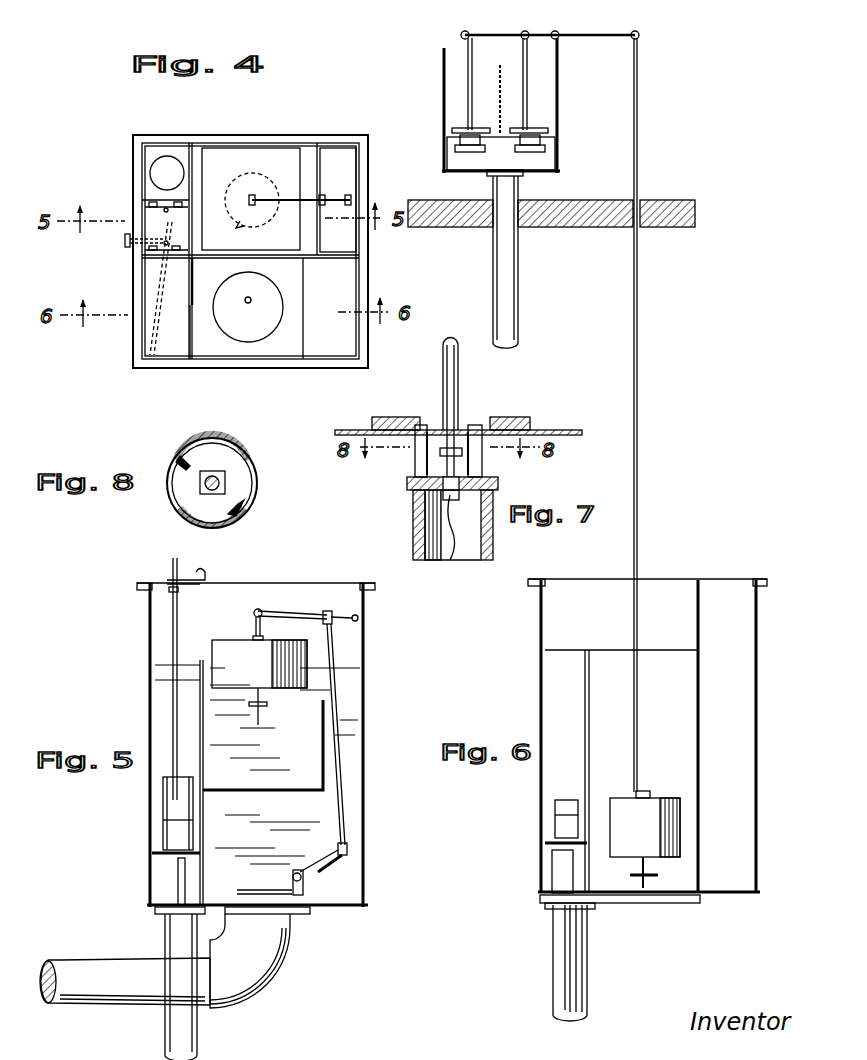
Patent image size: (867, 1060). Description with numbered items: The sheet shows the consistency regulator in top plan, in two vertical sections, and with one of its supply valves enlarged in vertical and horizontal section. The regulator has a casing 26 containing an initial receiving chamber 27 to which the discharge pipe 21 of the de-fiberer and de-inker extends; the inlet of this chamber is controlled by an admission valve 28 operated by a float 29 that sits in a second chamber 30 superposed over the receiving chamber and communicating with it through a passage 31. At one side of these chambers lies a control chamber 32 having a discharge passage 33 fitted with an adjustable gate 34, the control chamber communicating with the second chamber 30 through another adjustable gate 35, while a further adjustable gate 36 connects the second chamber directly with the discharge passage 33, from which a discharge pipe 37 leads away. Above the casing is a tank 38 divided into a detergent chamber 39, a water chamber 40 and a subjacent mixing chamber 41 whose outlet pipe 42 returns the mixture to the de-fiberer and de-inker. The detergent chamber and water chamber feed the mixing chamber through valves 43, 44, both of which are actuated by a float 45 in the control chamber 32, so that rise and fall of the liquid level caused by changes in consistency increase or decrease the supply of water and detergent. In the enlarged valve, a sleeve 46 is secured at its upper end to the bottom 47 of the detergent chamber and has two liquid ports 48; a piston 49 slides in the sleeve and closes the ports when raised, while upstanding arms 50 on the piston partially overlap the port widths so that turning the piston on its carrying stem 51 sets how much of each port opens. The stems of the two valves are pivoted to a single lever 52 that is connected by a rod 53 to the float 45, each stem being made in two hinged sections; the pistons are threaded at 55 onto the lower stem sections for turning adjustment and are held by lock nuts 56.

In FIG. 5, the discharge pipe 21 is at (122, 963).
In FIG. 4, the casing 26 is at (168, 140).
In FIG. 5, the casing 26 is at (147, 650).
In FIG. 6, the casing 26 is at (539, 805).
In FIG. 4, the initial receiving chamber 27 is at (322, 160).
In FIG. 5, the initial receiving chamber 27 is at (228, 905).
In FIG. 4, the admission valve 28 is at (300, 221).
In FIG. 5, the admission valve 28 is at (300, 905).
In FIG. 4, the operating float 29 is at (253, 153).
In FIG. 5, the operating float 29 is at (259, 682).
In FIG. 4, the second chamber 30 is at (196, 150).
In FIG. 5, the second chamber 30 is at (302, 740).
In FIG. 6, the second chamber 30 is at (621, 771).
In FIG. 4, the passage 31 is at (160, 170).
In FIG. 5, the passage 31 is at (352, 772).
In FIG. 4, the control chamber 32 is at (290, 345).
In FIG. 6, the control chamber 32 is at (622, 890).
In FIG. 4, the discharge passage 33 is at (190, 330).
In FIG. 5, the discharge passage 33 is at (190, 875).
In FIG. 6, the discharge passage 33 is at (565, 905).
In FIG. 4, the adjustable gate 34 is at (150, 283).
In FIG. 5, the adjustable gate 34 is at (180, 893).
In FIG. 6, the adjustable gate 34 is at (565, 872).
In FIG. 4, the adjustable gate 35 is at (175, 255).
In FIG. 6, the adjustable gate 35 is at (560, 815).
In FIG. 4, the adjustable gate 36 is at (150, 200).
In FIG. 5, the adjustable gate 36 is at (178, 812).
In FIG. 5, the discharge pipe 37 is at (172, 1030).
In FIG. 6, the discharge pipe 37 is at (555, 965).
In FIG. 6, the tank 38 is at (558, 122).
In FIG. 6, the detergent chamber 39 is at (455, 82).
In FIG. 6, the water chamber 40 is at (530, 88).
In FIG. 6, the detergent and water mixing chamber 41 is at (545, 150).
In FIG. 6, the outlet pipe 42 is at (520, 310).
In FIG. 7, the valve 43 is at (412, 530).
In FIG. 6, the valve 43 is at (462, 155).
In FIG. 6, the valve 44 is at (551, 202).
In FIG. 4, the float 45 is at (248, 307).
In FIG. 6, the float 45 is at (645, 839).
In FIG. 8, the sleeve 46 is at (214, 444).
In FIG. 7, the sleeve 46 is at (498, 480).
In FIG. 7, the bottom 47 is at (540, 428).
In FIG. 6, the bottom 47 is at (545, 158).
In FIG. 8, the liquid ports 48 is at (254, 468).
In FIG. 7, the liquid ports 48 is at (418, 456).
In FIG. 8, the piston 49 is at (238, 491).
In FIG. 7, the piston 49 is at (470, 545).
In FIG. 8, the upstanding arms 50 is at (184, 470).
In FIG. 7, the upstanding arms 50 is at (437, 432).
In FIG. 7, the stem 51 is at (456, 392).
In FIG. 6, the stem 51 is at (465, 110).
In FIG. 6, the lever 52 is at (632, 33).
In FIG. 6, the rod 53 is at (638, 152).
In FIG. 7, the threads 55 is at (450, 553).
In FIG. 8, the lock nuts 56 is at (200, 486).
In FIG. 7, the lock nuts 56 is at (415, 498).